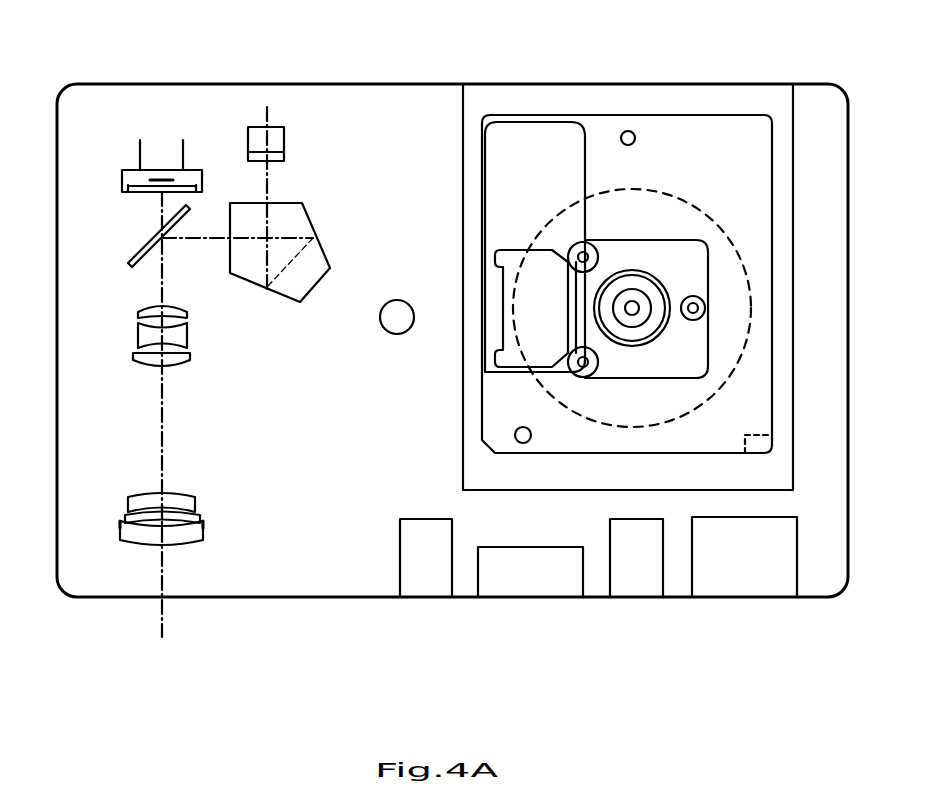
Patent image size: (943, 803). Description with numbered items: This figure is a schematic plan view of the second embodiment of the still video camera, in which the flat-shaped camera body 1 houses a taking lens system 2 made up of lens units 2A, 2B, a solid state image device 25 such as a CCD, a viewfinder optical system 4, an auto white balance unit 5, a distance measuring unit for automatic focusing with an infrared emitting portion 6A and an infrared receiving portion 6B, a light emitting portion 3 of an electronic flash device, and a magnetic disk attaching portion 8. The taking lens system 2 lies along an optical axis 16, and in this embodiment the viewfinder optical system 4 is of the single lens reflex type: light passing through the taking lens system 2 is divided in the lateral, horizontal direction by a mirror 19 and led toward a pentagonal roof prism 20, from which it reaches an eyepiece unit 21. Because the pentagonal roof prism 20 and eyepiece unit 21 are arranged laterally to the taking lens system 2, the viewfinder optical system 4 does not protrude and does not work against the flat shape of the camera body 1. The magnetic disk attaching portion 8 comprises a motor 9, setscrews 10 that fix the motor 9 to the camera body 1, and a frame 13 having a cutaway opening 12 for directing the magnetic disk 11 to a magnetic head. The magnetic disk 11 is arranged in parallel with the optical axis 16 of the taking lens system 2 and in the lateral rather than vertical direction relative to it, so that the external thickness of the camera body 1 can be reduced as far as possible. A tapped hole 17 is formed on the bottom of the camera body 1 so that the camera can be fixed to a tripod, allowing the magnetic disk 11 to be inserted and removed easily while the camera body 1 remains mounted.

The camera body 1 is at (415, 98).
The taking lens system 2 is at (120, 511).
The lens unit 2A is at (125, 512).
The lens unit 2B is at (138, 340).
The light emitting portion 3 is at (750, 585).
The viewfinder optical system 4 is at (303, 145).
The auto white balance unit 5 is at (538, 585).
The infrared emitting portion 6A is at (423, 588).
The infrared receiving portion 6B is at (637, 585).
The magnetic disk attaching portion 8 is at (730, 115).
The motor 9 is at (678, 245).
The setscrews 10 is at (597, 250).
The magnetic disk 11 is at (605, 190).
The cutaway opening 12 is at (513, 252).
The frame 13 is at (497, 148).
The optical axis 16 is at (162, 411).
The tapped hole 17 is at (387, 333).
The mirror 19 is at (140, 253).
The pentagonal roof prism 20 is at (305, 297).
The eyepiece unit 21 is at (277, 125).
The solid state image device 25 is at (127, 170).